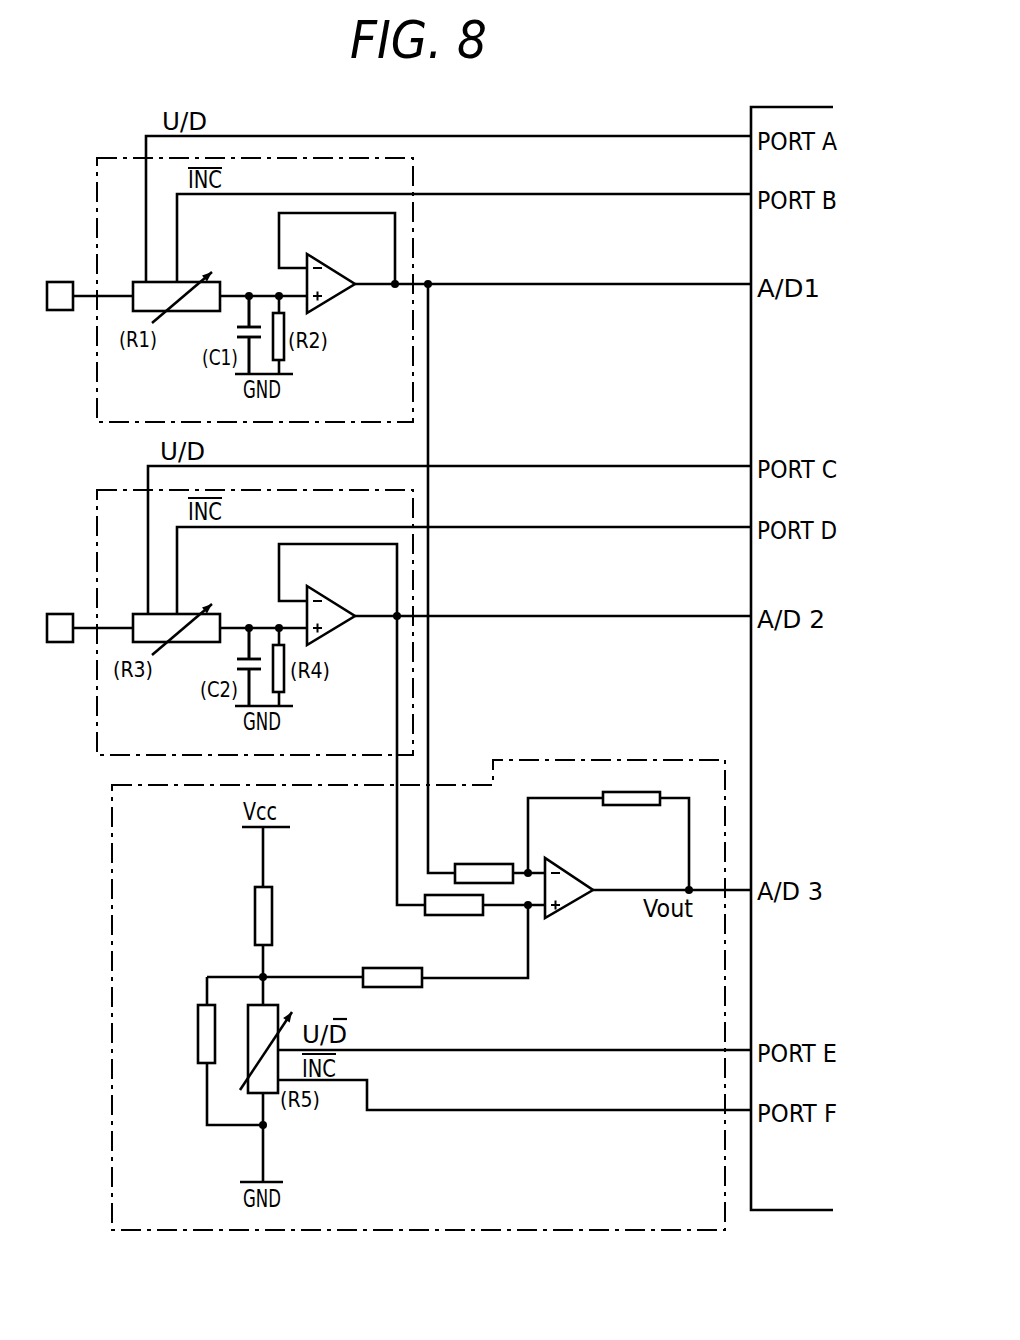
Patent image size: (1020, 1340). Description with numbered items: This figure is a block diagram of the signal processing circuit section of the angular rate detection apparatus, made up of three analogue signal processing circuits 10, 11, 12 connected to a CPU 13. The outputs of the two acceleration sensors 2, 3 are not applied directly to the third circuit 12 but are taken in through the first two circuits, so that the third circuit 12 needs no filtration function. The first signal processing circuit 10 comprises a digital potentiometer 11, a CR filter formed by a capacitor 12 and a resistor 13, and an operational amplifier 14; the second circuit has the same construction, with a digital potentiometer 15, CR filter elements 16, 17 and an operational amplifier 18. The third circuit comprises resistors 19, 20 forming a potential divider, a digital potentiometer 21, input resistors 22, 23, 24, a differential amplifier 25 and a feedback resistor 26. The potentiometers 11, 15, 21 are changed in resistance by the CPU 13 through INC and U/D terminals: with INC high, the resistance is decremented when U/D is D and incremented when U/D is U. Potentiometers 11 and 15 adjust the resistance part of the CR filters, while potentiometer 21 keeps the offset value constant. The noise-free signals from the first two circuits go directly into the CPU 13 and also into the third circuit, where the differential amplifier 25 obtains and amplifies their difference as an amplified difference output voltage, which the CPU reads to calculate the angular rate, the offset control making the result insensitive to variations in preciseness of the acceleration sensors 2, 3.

The acceleration sensor 2 is at (66, 614).
The acceleration sensor 3 is at (66, 282).
The signal processing circuit 10 is at (413, 240).
The digital potentiometer 11 is at (188, 312).
The CR filter capacitor 12 is at (232, 330).
The CR filter resistor 13 is at (284, 355).
The operational amplifier 14 is at (340, 272).
The digital potentiometer 15 is at (188, 644).
The CR filter capacitor 16 is at (232, 662).
The CR filter resistor 17 is at (284, 687).
The operational amplifier 18 is at (340, 604).
The resistor 19 is at (272, 905).
The resistor 20 is at (198, 1021).
The digital potentiometer 21 is at (275, 1094).
The input resistor 22 is at (409, 968).
The input resistor 23 is at (471, 916).
The input resistor 24 is at (499, 864).
The differential amplifier 25 is at (580, 878).
The feedback resistor 26 is at (642, 792).